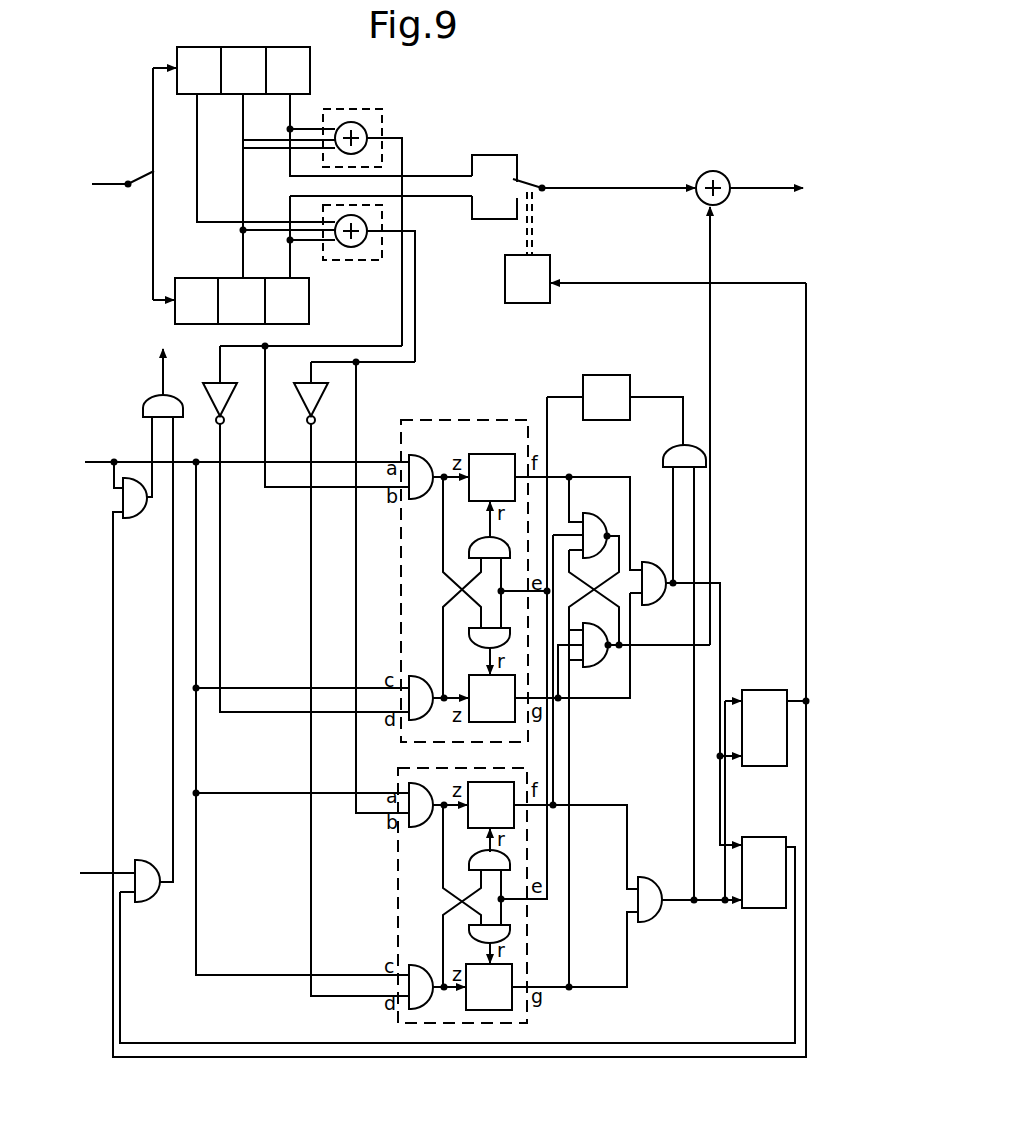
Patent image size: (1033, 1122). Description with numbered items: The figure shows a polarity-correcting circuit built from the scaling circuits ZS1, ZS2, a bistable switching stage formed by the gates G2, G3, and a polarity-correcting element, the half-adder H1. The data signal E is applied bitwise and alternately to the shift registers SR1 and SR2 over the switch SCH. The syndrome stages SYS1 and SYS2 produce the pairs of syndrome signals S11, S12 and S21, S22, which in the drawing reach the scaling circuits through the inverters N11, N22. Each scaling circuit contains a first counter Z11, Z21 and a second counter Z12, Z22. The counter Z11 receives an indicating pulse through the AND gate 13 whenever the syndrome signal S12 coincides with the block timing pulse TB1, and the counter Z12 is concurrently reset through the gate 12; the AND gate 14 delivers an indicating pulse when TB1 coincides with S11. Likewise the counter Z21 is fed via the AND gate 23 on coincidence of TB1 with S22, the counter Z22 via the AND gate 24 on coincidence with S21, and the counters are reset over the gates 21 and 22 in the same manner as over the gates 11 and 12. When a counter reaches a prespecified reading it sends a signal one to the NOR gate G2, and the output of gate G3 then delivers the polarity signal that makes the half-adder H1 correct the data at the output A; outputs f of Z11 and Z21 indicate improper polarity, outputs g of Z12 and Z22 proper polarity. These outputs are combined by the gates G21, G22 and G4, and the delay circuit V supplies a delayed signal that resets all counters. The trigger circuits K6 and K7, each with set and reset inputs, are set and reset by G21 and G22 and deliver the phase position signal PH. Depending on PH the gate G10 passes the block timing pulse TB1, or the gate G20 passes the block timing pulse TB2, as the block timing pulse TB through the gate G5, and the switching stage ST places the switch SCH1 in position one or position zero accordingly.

The shift register SR1 is at (266, 40).
The shift register SR2 is at (309, 297).
The switch SCH is at (124, 170).
The data signal E is at (92, 200).
The syndrome stage SYS1 is at (376, 101).
The syndrome stage SYS2 is at (333, 262).
The switch SCH1 is at (524, 188).
The switching stage ST is at (527, 279).
The half-adder H1 is at (726, 168).
The delay circuit A is at (784, 178).
The block timing pulse TB is at (148, 373).
The gate G5 is at (142, 411).
The block timing pulse TB1 is at (101, 450).
The block timing pulse TB2 is at (98, 863).
The gate G10 is at (140, 520).
The gate G20 is at (150, 904).
The inverter N11 is at (236, 398).
The inverter N22 is at (327, 398).
The syndrome signal S11 is at (240, 454).
The syndrome signal S12 is at (285, 454).
The syndrome signal S21 is at (332, 454).
The syndrome signal S22 is at (377, 454).
The scaling circuit ZS1 is at (460, 413).
The scaling circuit ZS2 is at (406, 765).
The AND gate 13 is at (425, 500).
The AND gate 14 is at (427, 721).
The gate 11 is at (508, 530).
The gate 12 is at (476, 638).
The AND gate 23 is at (425, 828).
The AND gate 24 is at (427, 1004).
The gate 21 is at (476, 859).
The gate 22 is at (476, 934).
The first counter Z11 is at (492, 477).
The second counter Z12 is at (492, 698).
The first counter Z21 is at (491, 805).
The second counter Z22 is at (489, 987).
The NOR gate G2 is at (605, 525).
The gate G3 is at (603, 668).
The gate G4 is at (668, 448).
The gate G21 is at (660, 606).
The gate G22 is at (655, 923).
The delay circuit V is at (606, 397).
The trigger circuit K6 is at (764, 728).
The trigger circuit K7 is at (764, 872).
The phase position signal PH is at (795, 684).